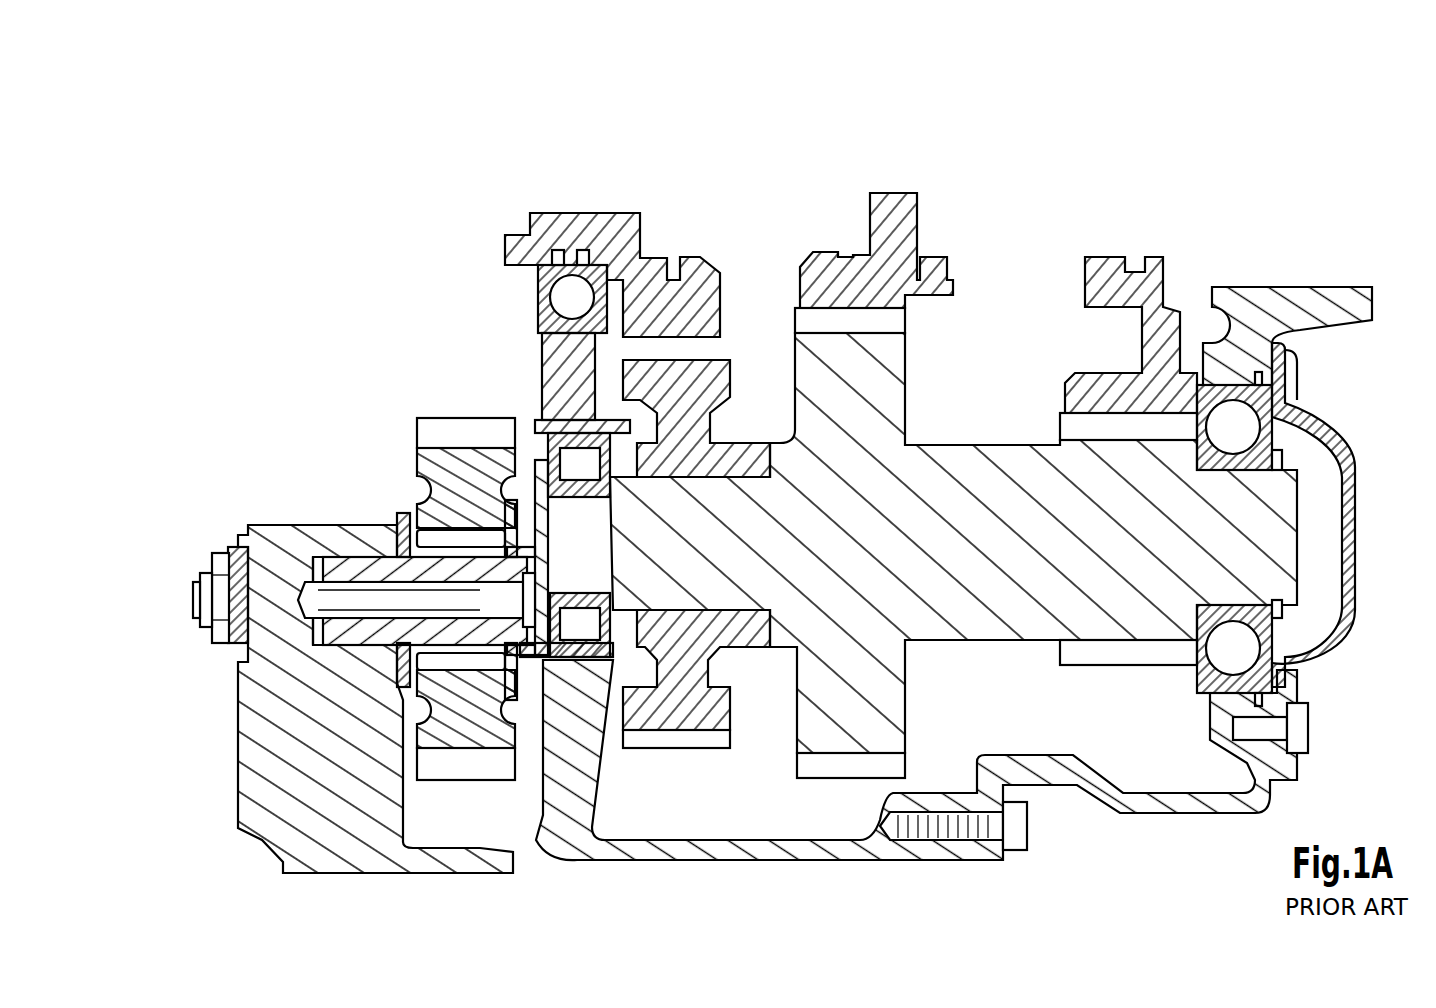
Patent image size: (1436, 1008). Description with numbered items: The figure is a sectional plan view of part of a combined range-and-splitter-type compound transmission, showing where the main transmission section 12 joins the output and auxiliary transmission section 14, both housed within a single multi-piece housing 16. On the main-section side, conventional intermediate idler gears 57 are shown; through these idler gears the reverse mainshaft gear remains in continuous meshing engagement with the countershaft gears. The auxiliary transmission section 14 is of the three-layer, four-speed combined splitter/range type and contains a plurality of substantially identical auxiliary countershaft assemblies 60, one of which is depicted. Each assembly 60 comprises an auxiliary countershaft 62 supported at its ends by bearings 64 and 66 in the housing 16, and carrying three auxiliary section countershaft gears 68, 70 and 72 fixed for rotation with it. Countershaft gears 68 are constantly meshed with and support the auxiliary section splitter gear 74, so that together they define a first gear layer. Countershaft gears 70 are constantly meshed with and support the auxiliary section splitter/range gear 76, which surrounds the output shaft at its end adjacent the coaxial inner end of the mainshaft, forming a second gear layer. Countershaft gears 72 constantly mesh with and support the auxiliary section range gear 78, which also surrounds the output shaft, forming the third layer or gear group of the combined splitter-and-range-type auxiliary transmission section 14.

The main transmission section 12 is at (233, 128).
The auxiliary transmission section 14 is at (515, 128).
The housing 16 is at (285, 775).
The intermediate idler gears 57 is at (460, 728).
The auxiliary countershaft assemblies 60 is at (966, 306).
The auxiliary countershaft 62 is at (1000, 598).
The bearing 64 is at (580, 465).
The bearing 66 is at (1245, 433).
The auxiliary section countershaft gear 68 is at (668, 703).
The auxiliary section countershaft gear 70 is at (865, 705).
The auxiliary section countershaft gear 72 is at (1117, 652).
The auxiliary section splitter gear 74 is at (703, 300).
The auxiliary section splitter/range gear 76 is at (803, 292).
The auxiliary section range gear 78 is at (1158, 290).